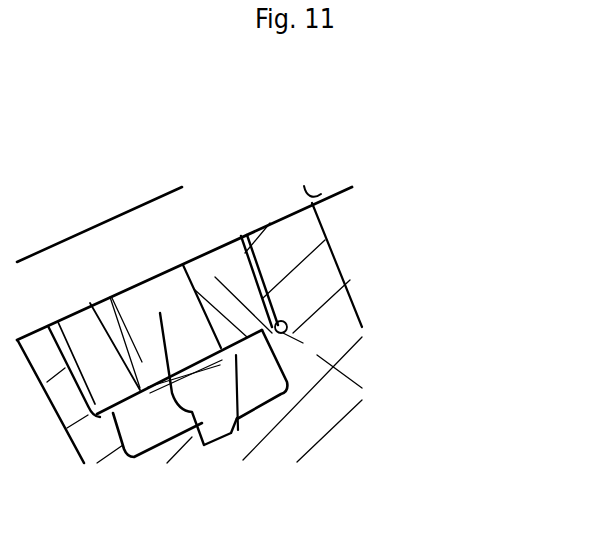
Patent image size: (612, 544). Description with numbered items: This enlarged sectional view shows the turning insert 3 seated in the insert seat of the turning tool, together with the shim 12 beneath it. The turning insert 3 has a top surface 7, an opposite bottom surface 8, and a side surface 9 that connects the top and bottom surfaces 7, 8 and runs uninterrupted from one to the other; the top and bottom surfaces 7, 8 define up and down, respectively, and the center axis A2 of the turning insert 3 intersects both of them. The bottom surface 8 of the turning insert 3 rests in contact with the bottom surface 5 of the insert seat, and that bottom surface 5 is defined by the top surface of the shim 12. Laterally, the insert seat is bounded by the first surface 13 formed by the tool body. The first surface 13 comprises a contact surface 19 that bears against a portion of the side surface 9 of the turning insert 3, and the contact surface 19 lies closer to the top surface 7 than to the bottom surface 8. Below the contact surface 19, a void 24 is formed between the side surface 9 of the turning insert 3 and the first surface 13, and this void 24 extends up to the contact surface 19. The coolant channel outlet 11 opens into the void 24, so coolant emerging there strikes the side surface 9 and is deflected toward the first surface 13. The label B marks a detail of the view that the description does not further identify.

The top surface 7 is at (200, 255).
The turning insert 3 is at (180, 327).
The bottom surface 5 is at (92, 303).
The center axis A2 is at (157, 302).
The shim 12 is at (200, 393).
The bottom surface 8 is at (213, 330).
The contact surface 19 is at (247, 253).
The first surface 13 is at (257, 278).
The side surface 9 is at (268, 302).
The void 24 is at (273, 313).
The coolant channel outlet 11 is at (275, 350).
The view direction B is at (0, 425).